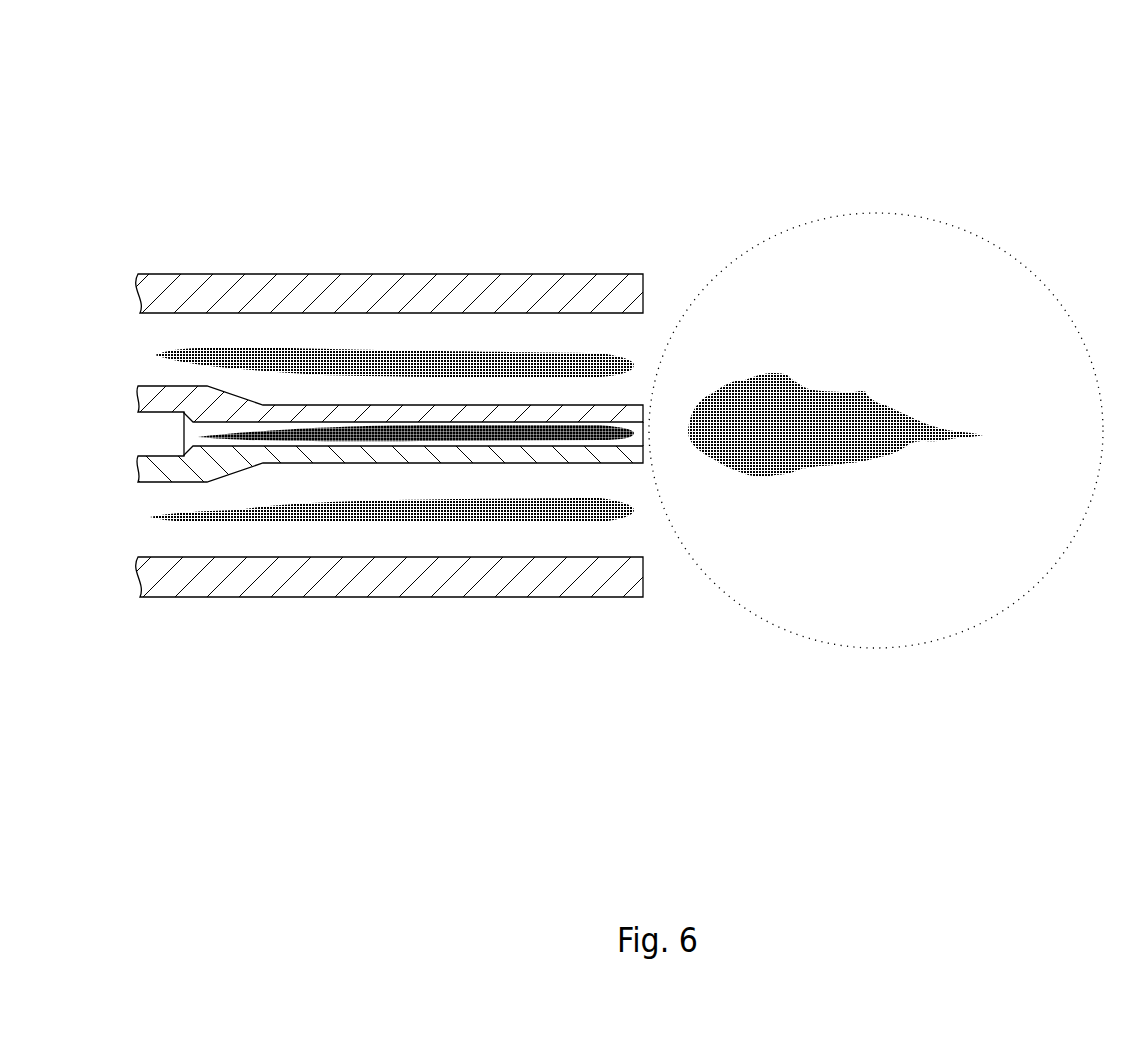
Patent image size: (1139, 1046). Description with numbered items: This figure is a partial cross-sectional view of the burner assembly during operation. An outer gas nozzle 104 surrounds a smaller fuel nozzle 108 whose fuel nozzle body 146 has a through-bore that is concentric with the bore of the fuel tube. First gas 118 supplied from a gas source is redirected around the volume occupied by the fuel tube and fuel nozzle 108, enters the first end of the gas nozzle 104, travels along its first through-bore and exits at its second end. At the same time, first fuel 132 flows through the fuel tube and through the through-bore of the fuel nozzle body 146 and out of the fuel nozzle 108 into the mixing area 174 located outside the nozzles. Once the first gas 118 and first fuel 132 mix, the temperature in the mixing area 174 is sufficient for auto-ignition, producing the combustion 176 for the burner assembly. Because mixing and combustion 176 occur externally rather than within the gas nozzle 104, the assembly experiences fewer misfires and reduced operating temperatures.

The gas nozzle 104 is at (242, 275).
The fuel nozzle 108 is at (390, 348).
The fuel nozzle body 146 is at (347, 405).
The first gas 118 is at (518, 360).
The first fuel 132 is at (433, 431).
The mixing area 174 is at (847, 213).
The combustion 176 is at (780, 471).